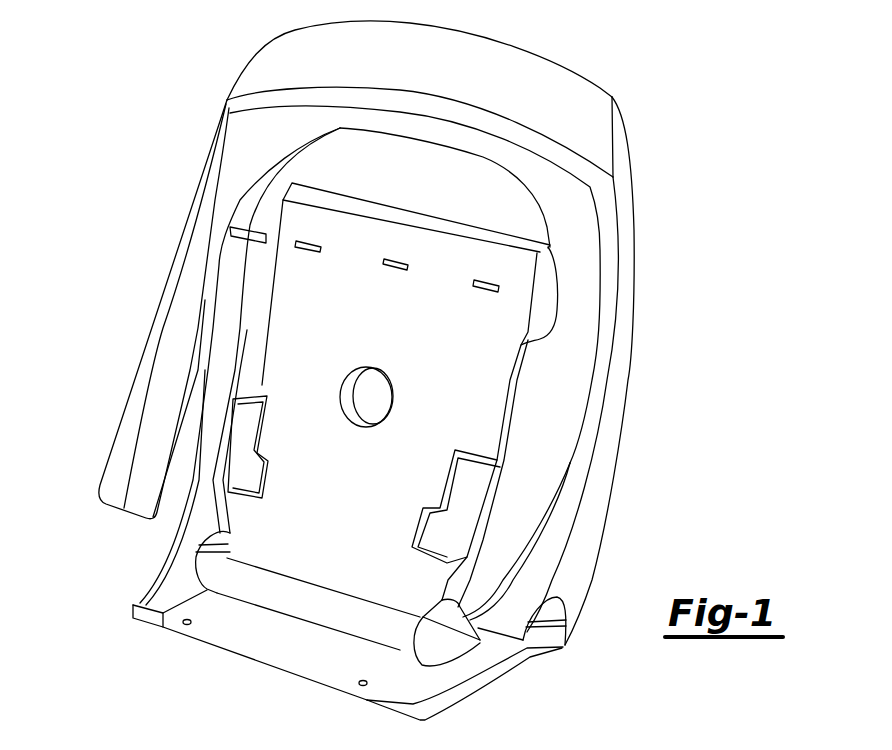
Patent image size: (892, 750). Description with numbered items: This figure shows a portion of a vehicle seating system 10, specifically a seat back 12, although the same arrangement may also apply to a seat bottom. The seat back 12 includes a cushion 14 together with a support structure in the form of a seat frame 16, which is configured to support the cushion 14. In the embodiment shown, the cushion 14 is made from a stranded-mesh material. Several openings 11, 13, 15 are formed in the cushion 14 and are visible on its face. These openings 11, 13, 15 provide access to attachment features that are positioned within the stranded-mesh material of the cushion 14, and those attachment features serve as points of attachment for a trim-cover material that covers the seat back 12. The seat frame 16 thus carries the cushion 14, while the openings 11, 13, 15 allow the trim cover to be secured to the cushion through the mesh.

The vehicle seating system 10 is at (678, 112).
The opening 11 is at (308, 252).
The seat back 12 is at (120, 99).
The opening 13 is at (396, 268).
The cushion 14 is at (287, 327).
The opening 15 is at (488, 292).
The seat frame 16 is at (132, 422).